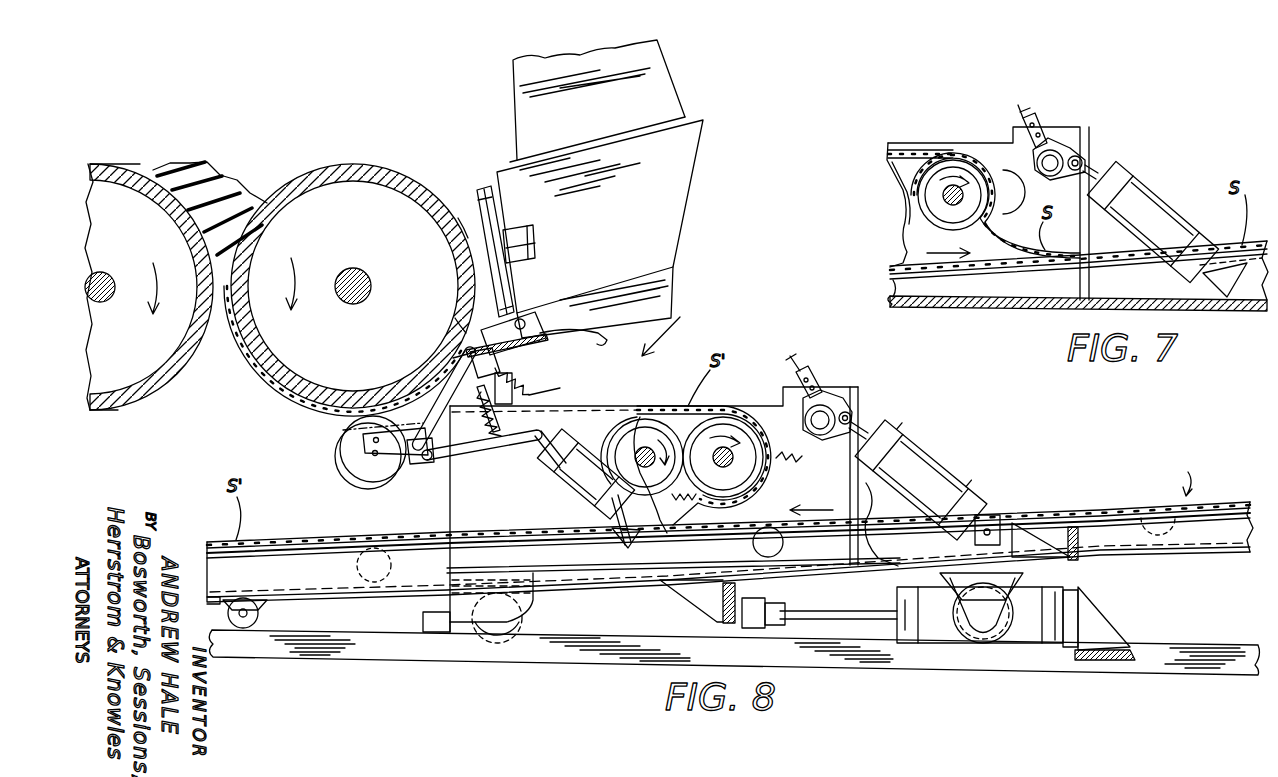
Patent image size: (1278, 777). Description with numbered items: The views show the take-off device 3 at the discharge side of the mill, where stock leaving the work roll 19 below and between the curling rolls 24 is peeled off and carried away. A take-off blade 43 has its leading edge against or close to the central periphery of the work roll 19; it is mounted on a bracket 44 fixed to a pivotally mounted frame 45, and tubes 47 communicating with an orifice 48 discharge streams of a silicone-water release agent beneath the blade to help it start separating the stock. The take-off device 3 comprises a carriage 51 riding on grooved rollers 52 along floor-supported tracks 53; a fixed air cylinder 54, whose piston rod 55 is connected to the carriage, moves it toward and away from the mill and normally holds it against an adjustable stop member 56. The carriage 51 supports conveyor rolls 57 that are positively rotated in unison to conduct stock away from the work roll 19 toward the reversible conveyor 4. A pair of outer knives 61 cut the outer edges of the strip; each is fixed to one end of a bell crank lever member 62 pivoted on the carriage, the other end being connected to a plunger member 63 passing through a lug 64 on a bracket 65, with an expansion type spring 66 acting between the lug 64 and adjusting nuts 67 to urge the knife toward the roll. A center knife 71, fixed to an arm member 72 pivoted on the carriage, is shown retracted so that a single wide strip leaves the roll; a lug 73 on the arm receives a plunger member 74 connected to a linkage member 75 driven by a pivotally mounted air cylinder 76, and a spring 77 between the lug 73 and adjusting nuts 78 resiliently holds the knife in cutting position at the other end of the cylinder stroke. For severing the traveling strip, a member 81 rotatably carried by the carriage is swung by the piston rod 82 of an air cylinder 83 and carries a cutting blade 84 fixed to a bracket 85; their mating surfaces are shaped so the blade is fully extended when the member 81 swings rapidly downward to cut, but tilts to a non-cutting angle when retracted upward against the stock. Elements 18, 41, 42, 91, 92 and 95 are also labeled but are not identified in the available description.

In FIG. 8, the take-off device 3 is at (668, 330).
In FIG. 8, the reversible conveyor 4 is at (1182, 478).
In FIG. 8, the feed wheel 18 is at (150, 172).
In FIG. 8, the work roll 19 is at (352, 166).
In FIG. 8, the curling rolls 24 is at (481, 198).
In FIG. 8, the bracket 41 is at (536, 240).
In FIG. 8, the guide 42 is at (458, 228).
In FIG. 8, the take-off blade 43 is at (466, 348).
In FIG. 8, the bracket 44 is at (681, 208).
In FIG. 8, the pivotally mounted frame 45 is at (664, 96).
In FIG. 8, the tubes 47 is at (606, 336).
In FIG. 8, the orifice 48 is at (459, 318).
In FIG. 8, the carriage 51 is at (447, 498).
In FIG. 8, the grooved rollers 52 is at (530, 602).
In FIG. 8, the floor-supported tracks 53 is at (530, 667).
In FIG. 8, the fixed air cylinder 54 is at (936, 622).
In FIG. 8, the piston rod 55 is at (827, 608).
In FIG. 8, the stop member 56 is at (422, 622).
In FIG. 8, the conveyor rolls 57 is at (653, 427).
In FIG. 8, the outer knives 61 is at (362, 437).
In FIG. 8, the bell crank lever member 62 is at (420, 385).
In FIG. 8, the plunger member 63 is at (528, 381).
In FIG. 8, the lug 64 is at (500, 362).
In FIG. 8, the bracket 65 is at (508, 398).
In FIG. 8, the expansion type spring 66 is at (556, 387).
In FIG. 8, the adjusting nuts 67 is at (565, 402).
In FIG. 8, the knife 71 is at (352, 480).
In FIG. 8, the arm member 72 is at (440, 462).
In FIG. 8, the lug 73 is at (497, 440).
In FIG. 8, the plunger member 74 is at (458, 458).
In FIG. 8, the linkage member 75 is at (536, 444).
In FIG. 8, the pivotally mounted air cylinder 76 is at (600, 472).
In FIG. 8, the expansion type spring 77 is at (478, 410).
In FIG. 8, the adjusting nuts 78 is at (452, 360).
In FIG. 8, the member 81 is at (832, 396).
In FIG. 7, the member 81 is at (1060, 148).
In FIG. 8, the piston rod 82 is at (868, 418).
In FIG. 7, the piston rod 82 is at (1092, 172).
In FIG. 8, the air cylinder 83 is at (956, 478).
In FIG. 7, the air cylinder 83 is at (1160, 200).
In FIG. 8, the cutting blade 84 is at (792, 358).
In FIG. 7, the cutting blade 84 is at (1022, 112).
In FIG. 8, the bracket 85 is at (811, 372).
In FIG. 7, the bracket 85 is at (1041, 126).
In FIG. 8, the conveyor 91 is at (1197, 537).
In FIG. 8, the roller 92 is at (753, 546).
In FIG. 8, the ramp 95 is at (1090, 512).